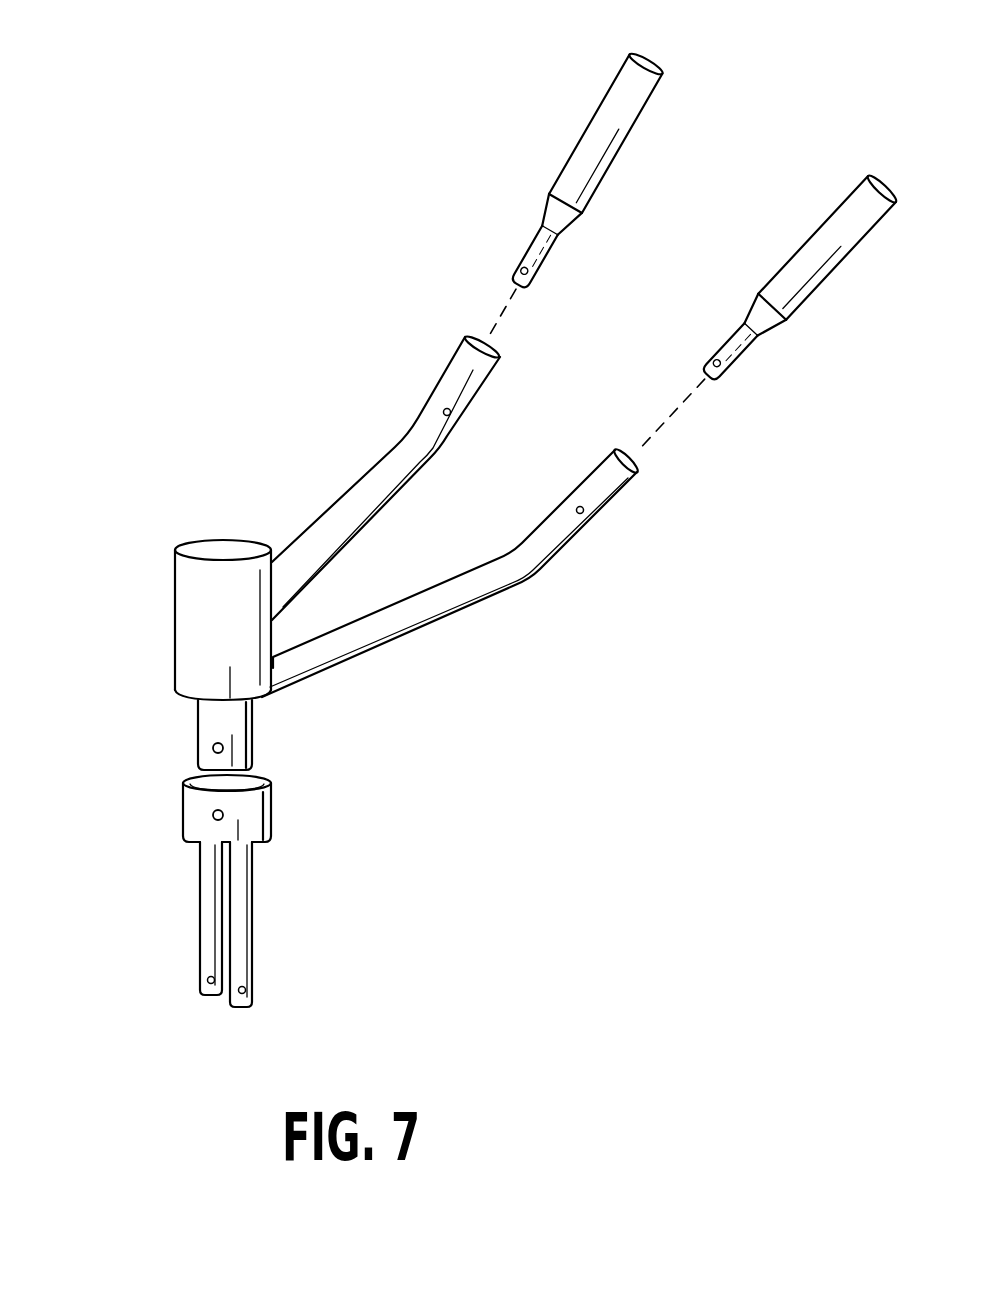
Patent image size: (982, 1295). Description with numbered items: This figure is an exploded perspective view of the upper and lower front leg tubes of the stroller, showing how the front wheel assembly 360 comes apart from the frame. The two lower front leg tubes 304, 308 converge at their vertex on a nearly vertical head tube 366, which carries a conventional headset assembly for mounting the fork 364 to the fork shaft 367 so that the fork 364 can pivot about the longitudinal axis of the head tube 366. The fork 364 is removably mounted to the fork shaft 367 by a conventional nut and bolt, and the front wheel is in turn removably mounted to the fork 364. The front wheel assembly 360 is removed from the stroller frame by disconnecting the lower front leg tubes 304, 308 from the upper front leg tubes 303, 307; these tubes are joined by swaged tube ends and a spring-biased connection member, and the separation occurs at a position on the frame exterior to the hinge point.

The upper front leg tube 303 is at (583, 130).
The upper front leg tube 307 is at (793, 255).
The lower front leg tube 304 is at (343, 497).
The lower front leg tube 308 is at (478, 573).
The front wheel assembly 360 is at (185, 516).
The head tube 366 is at (173, 615).
The fork shaft 367 is at (197, 730).
The fork 364 is at (183, 887).